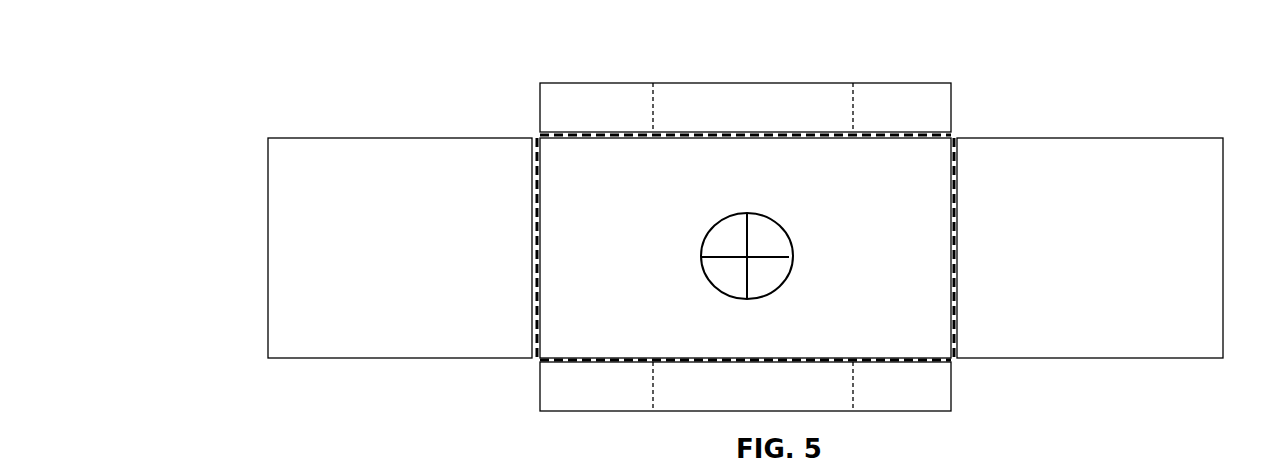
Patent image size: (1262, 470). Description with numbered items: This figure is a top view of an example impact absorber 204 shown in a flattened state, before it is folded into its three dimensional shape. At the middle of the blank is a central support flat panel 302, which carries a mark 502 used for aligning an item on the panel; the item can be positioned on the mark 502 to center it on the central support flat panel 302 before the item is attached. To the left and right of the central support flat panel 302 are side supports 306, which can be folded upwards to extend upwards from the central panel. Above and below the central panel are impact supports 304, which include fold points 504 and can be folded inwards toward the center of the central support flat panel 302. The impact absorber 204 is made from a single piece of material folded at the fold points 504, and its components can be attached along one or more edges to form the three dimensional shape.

The impact absorber 204 is at (213, 124).
The central support flat panel 302 is at (938, 151).
The impact supports 304 is at (775, 110).
The side supports 306 is at (402, 175).
The mark 502 is at (712, 282).
The fold points 504 is at (537, 138).